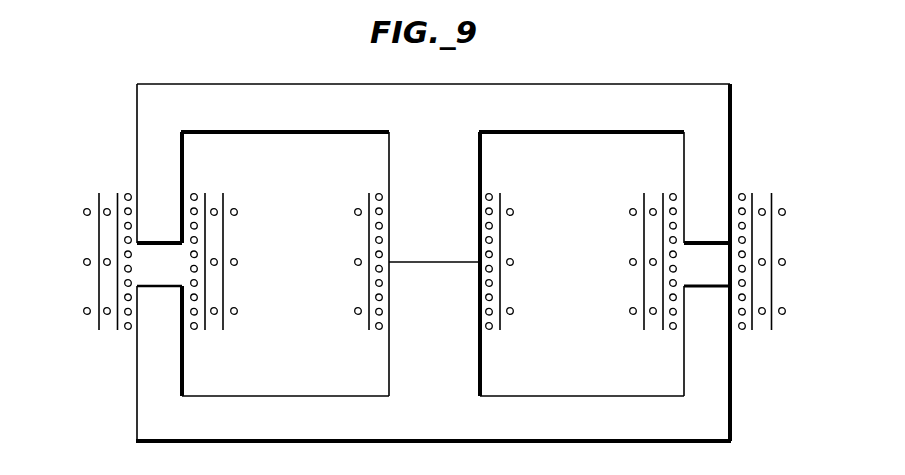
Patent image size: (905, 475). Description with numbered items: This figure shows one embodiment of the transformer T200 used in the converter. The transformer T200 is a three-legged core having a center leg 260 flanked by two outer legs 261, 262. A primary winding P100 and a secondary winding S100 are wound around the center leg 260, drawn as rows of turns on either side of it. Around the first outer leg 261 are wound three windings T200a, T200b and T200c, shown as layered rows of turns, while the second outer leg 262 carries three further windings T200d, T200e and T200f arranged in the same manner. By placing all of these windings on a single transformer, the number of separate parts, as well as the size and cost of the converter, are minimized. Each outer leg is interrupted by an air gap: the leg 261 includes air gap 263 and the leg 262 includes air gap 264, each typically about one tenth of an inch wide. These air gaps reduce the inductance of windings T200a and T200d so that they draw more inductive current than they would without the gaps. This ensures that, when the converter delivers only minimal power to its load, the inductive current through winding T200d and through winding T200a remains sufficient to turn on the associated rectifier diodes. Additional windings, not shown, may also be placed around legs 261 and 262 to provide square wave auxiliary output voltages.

The transformer T200 is at (431, 236).
The center leg 260 is at (435, 137).
The outer leg 261 is at (148, 135).
The outer leg 262 is at (715, 135).
The air gap 263 is at (162, 260).
The air gap 264 is at (708, 260).
The primary winding P100 is at (378, 336).
The secondary winding S100 is at (353, 199).
The winding T200a is at (742, 187).
The winding T200b is at (760, 187).
The winding T200c is at (788, 325).
The winding T200d is at (126, 183).
The winding T200e is at (107, 192).
The winding T200f is at (85, 326).